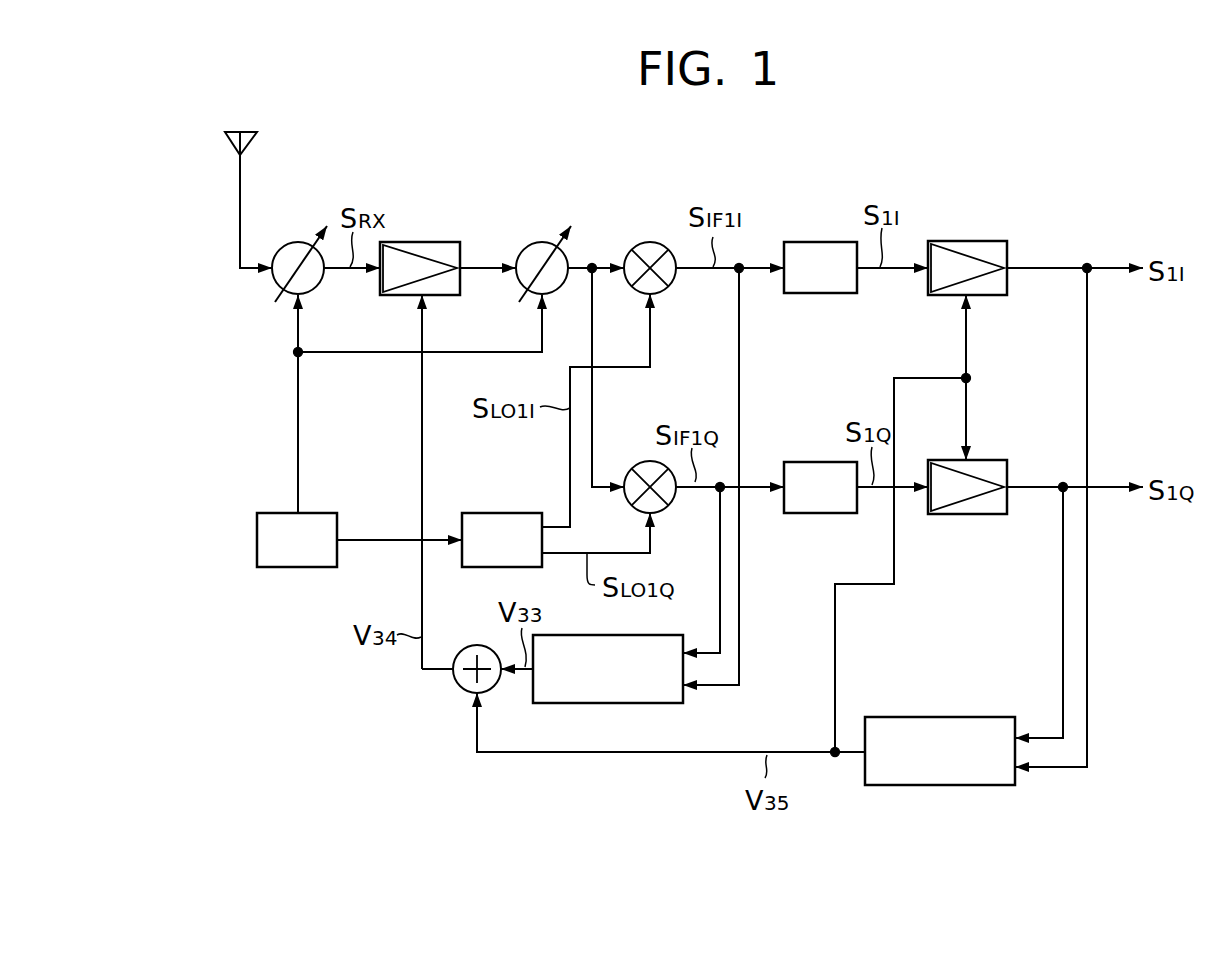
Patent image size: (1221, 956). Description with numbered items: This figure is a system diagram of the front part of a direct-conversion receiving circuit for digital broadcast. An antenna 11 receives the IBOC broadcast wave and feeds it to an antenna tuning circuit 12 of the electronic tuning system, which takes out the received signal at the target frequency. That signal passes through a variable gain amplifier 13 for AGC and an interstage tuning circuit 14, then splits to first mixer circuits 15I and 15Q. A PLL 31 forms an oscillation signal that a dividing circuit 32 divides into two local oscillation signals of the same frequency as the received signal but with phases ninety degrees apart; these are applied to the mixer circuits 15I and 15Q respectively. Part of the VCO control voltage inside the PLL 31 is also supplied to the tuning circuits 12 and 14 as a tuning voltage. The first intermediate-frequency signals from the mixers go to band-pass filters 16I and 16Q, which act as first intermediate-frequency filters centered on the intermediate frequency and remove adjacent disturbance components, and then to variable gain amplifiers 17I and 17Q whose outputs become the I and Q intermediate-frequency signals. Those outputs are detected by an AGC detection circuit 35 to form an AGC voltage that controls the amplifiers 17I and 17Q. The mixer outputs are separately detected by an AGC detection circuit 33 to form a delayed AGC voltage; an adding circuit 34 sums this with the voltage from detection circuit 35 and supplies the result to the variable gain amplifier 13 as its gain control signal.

The antenna 11 is at (242, 210).
The antenna tuning circuit 12 is at (293, 243).
The variable gain amplifier 13 is at (442, 240).
The interstage tuning circuit 14 is at (532, 243).
The first mixer circuit 15I is at (645, 242).
The first mixer circuit 15Q is at (640, 460).
The band-pass filter 16I is at (823, 242).
The band-pass filter 16Q is at (807, 462).
The variable gain amplifier 17I is at (993, 241).
The variable gain amplifier 17Q is at (982, 517).
The PLL 31 is at (282, 568).
The dividing circuit 32 is at (517, 513).
The AGC detection circuit 33 is at (647, 705).
The adding circuit 34 is at (455, 687).
The AGC detection circuit 35 is at (958, 787).